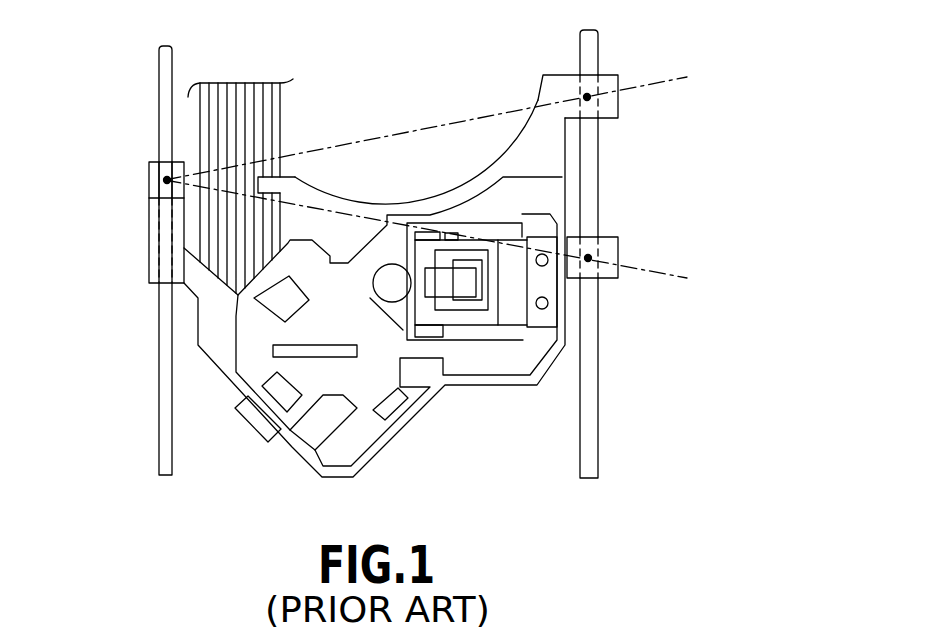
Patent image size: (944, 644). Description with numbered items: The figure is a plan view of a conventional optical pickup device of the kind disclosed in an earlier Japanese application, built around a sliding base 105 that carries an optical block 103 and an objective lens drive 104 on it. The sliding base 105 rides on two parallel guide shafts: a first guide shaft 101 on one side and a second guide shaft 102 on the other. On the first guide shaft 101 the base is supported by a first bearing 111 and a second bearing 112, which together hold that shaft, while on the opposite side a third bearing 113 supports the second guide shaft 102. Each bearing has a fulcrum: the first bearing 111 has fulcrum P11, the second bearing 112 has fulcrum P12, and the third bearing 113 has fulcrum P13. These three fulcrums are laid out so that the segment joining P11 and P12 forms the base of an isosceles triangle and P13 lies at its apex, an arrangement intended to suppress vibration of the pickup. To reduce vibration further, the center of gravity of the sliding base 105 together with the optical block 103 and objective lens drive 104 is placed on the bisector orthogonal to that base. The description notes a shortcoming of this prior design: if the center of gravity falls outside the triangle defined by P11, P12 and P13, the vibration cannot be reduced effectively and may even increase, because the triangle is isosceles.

The first guide shaft 101 is at (597, 409).
The second guide shaft 102 is at (165, 452).
The optical block 103 is at (330, 373).
The objective lens drive 104 is at (505, 282).
The sliding base 105 is at (372, 212).
The first bearing 111 is at (610, 108).
The second bearing 112 is at (615, 280).
The third bearing 113 is at (150, 192).
The fulcrum of the first bearing P11 is at (587, 97).
The fulcrum of the second bearing P12 is at (588, 258).
The fulcrum of the third bearing P13 is at (167, 180).